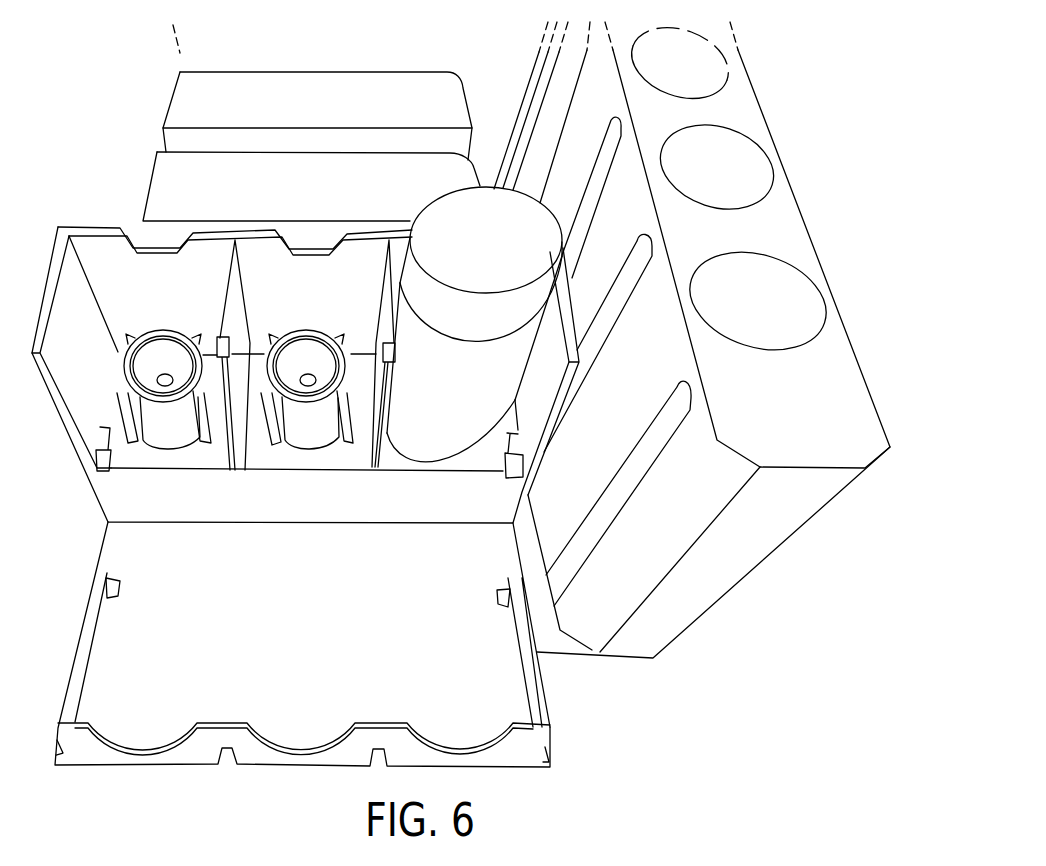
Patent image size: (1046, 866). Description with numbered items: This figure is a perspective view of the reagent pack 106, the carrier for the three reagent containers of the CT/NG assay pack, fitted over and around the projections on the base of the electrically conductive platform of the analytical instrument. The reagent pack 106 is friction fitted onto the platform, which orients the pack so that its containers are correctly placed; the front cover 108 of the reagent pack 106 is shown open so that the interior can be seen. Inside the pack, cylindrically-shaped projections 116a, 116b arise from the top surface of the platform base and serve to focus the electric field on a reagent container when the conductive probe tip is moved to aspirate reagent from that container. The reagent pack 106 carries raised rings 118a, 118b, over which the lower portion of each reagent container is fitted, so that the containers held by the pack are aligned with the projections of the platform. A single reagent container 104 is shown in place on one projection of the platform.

The reagent container 104 is at (443, 453).
The reagent pack 106 is at (69, 486).
The front cover 108 is at (112, 668).
The cylindrically-shaped projection 116a is at (158, 348).
The cylindrically-shaped projection 116b is at (304, 348).
The raised ring 118a is at (170, 437).
The raised ring 118b is at (303, 440).